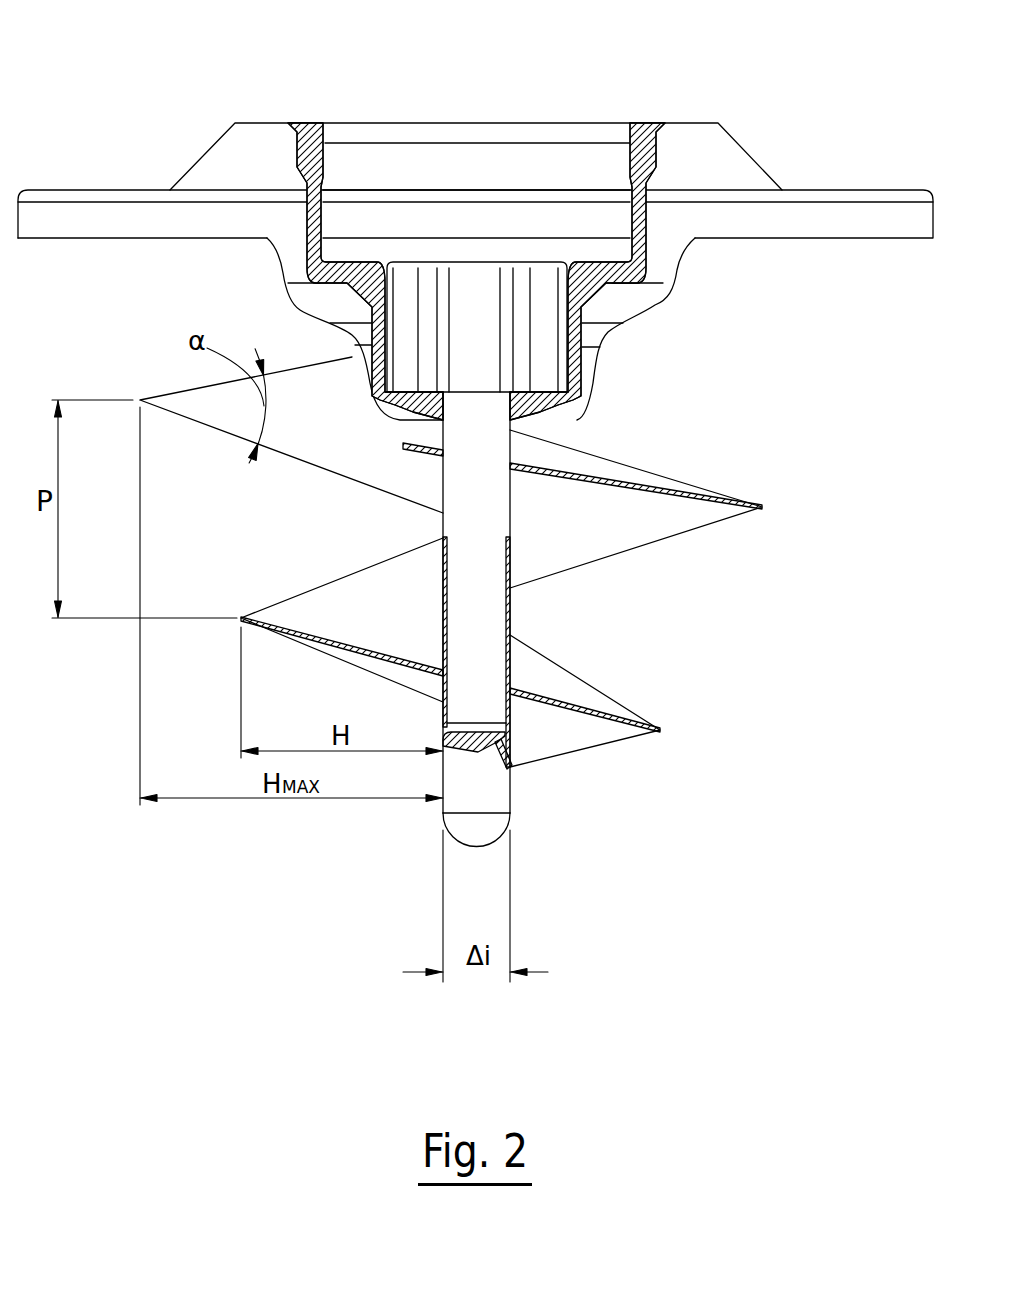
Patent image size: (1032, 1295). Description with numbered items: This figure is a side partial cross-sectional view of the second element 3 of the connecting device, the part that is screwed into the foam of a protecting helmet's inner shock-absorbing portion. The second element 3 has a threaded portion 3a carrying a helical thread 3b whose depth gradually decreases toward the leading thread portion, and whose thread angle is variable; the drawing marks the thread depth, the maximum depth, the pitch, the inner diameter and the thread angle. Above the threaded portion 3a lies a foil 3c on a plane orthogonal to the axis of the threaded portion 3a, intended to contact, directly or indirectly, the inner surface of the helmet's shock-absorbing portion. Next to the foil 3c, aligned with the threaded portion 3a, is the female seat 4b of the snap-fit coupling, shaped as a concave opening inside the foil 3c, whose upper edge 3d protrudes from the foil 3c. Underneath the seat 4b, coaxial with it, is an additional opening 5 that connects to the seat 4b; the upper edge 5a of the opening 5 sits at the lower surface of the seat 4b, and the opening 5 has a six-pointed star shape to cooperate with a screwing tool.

The second element 3 is at (782, 64).
The threaded portion 3a is at (777, 388).
The helical thread 3b is at (542, 737).
The foil 3c is at (85, 222).
The upper edge 3d is at (257, 172).
The seat 4b is at (327, 172).
The opening 5 is at (477, 323).
The upper edge 5a is at (595, 255).